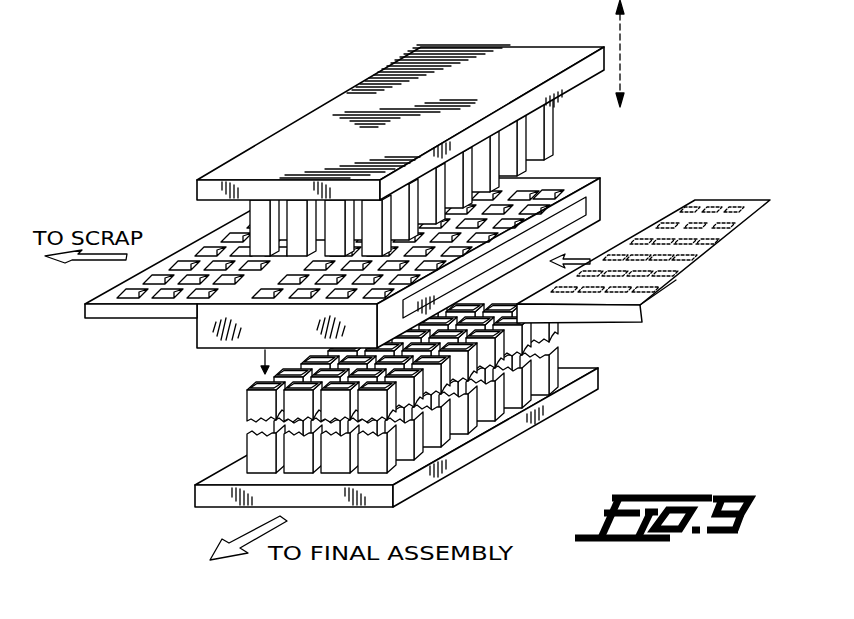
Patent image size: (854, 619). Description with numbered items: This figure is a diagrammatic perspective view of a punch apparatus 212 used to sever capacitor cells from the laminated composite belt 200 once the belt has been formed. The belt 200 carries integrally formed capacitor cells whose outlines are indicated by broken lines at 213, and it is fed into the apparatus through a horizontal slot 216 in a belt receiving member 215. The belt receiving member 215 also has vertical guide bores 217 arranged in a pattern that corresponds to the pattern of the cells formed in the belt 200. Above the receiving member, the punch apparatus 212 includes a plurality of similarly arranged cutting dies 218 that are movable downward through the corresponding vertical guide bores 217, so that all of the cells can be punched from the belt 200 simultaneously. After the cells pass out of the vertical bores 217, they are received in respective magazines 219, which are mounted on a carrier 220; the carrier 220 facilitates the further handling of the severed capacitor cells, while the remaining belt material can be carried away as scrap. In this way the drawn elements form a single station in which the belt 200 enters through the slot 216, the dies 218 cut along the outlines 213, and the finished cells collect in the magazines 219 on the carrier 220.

The composite belt 200 is at (724, 193).
The punch apparatus 212 is at (298, 108).
The outlines of capacitor cells 213 is at (676, 280).
The belt receiving member 215 is at (589, 177).
The horizontal slot 216 is at (588, 204).
The vertical guide bores 217 is at (537, 190).
The cutting dies 218 is at (548, 137).
The magazines 219 is at (256, 443).
The carrier 220 is at (486, 452).